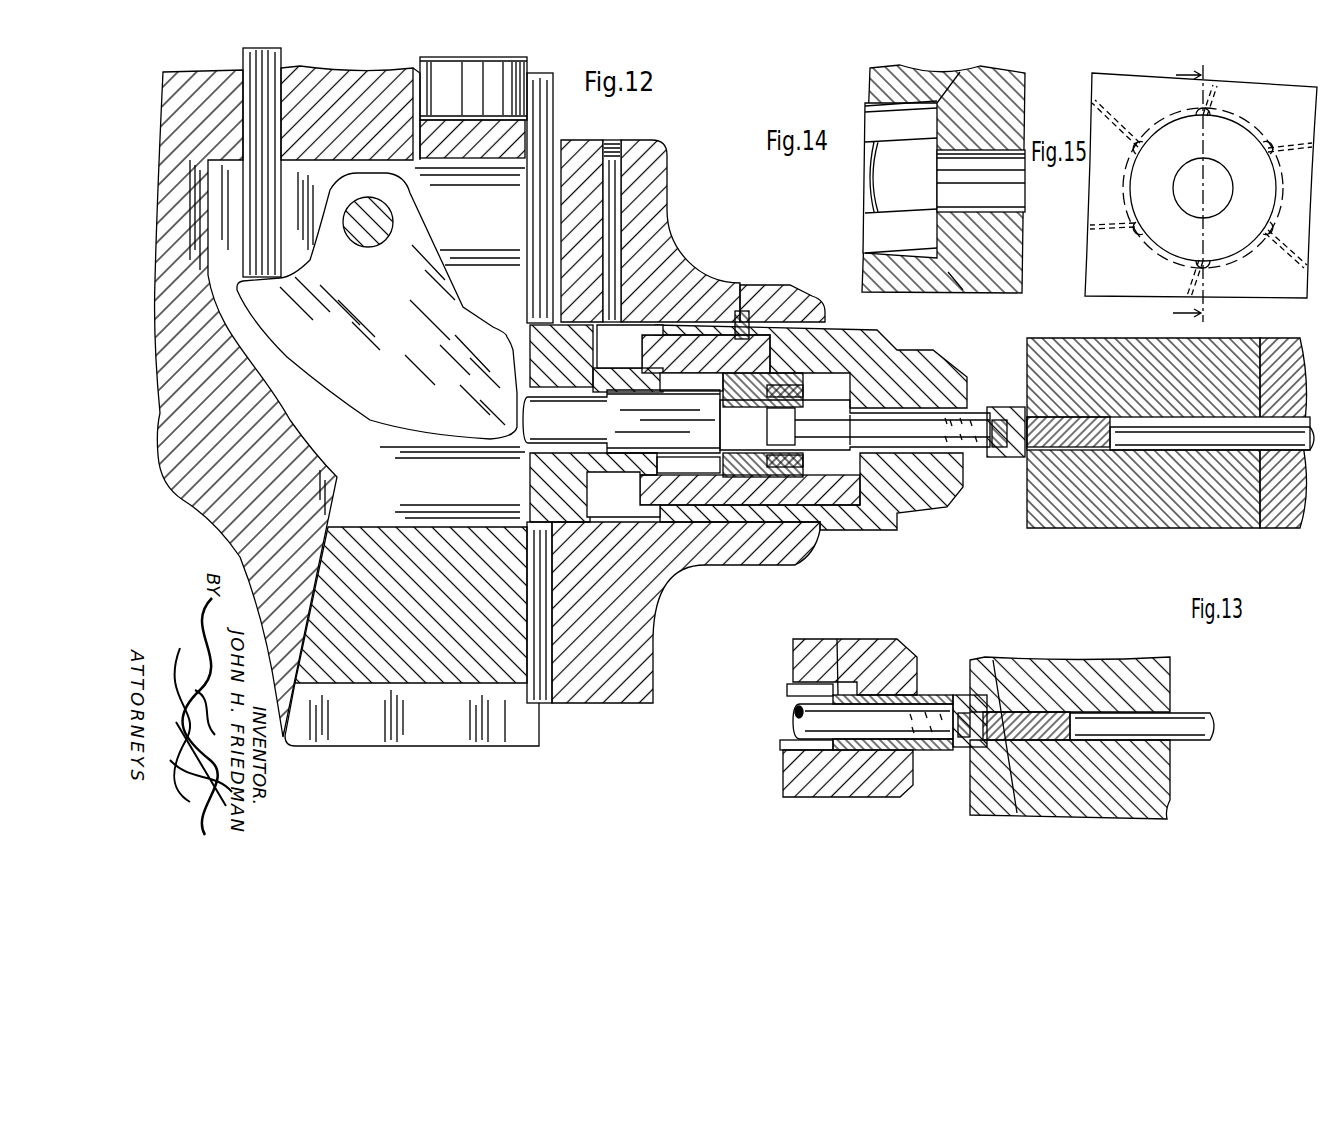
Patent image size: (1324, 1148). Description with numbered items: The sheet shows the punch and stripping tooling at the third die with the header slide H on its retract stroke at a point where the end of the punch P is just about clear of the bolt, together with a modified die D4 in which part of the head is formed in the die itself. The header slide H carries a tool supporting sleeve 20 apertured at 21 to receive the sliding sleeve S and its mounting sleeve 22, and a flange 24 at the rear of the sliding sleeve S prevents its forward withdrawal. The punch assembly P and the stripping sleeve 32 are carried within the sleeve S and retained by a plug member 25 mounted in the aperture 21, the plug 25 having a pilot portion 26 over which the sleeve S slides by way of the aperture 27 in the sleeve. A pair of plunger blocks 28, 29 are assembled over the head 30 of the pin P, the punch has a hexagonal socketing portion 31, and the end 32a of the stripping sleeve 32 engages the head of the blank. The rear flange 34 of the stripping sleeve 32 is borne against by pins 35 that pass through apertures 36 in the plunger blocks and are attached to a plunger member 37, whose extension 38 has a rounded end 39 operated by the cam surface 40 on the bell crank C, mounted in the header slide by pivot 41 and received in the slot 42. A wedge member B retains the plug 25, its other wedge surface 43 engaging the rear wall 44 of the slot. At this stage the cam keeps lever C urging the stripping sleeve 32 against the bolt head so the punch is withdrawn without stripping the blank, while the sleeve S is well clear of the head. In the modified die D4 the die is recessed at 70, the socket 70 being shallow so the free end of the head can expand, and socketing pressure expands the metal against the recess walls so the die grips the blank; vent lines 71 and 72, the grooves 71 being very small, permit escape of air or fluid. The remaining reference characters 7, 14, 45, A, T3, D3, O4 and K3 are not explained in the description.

In FIG. 12, the coupling sleeve 7 is at (1075, 450).
In FIG. 15, the section line 14 is at (1201, 195).
In FIG. 12, the tool supporting sleeve 20 is at (760, 285).
In FIG. 12, the aperture 21 is at (812, 530).
In FIG. 12, the mounting sleeve 22 is at (848, 532).
In FIG. 12, the flange 24 is at (655, 347).
In FIG. 12, the plug member 25 is at (538, 330).
In FIG. 12, the pilot portion 26 is at (632, 378).
In FIG. 12, the aperture 27 is at (718, 374).
In FIG. 12, the plunger block 28 is at (718, 383).
In FIG. 12, the plunger block 29 is at (822, 393).
In FIG. 12, the head 30 is at (790, 425).
In FIG. 12, the hexagonal socketing portion 31 is at (975, 452).
In FIG. 13, the hexagonal socketing portion 31 is at (930, 747).
In FIG. 12, the stripping sleeve 32 is at (913, 408).
In FIG. 13, the stripping sleeve 32 is at (925, 695).
In FIG. 12, the end of stripping sleeve 32a is at (990, 410).
In FIG. 13, the end of stripping sleeve 32a is at (960, 695).
In FIG. 12, the flange 34 is at (886, 402).
In FIG. 13, the flange 34 is at (837, 655).
In FIG. 12, the pins 35 is at (765, 393).
In FIG. 13, the pins 35 is at (787, 688).
In FIG. 12, the apertures 36 is at (752, 400).
In FIG. 12, the plunger member 37 is at (665, 430).
In FIG. 12, the extension 38 is at (525, 446).
In FIG. 12, the rounded end 39 is at (524, 392).
In FIG. 12, the cam surface 40 is at (507, 347).
In FIG. 12, the pivot 41 is at (390, 220).
In FIG. 12, the slot 42 is at (509, 520).
In FIG. 12, the wedge surface 43 is at (323, 513).
In FIG. 12, the rear wall 44 is at (318, 490).
In FIG. 12, the surface 45 is at (527, 479).
In FIG. 14, the socket 70 is at (880, 120).
In FIG. 15, the socket 70 is at (1245, 140).
In FIG. 14, the vent lines 71 is at (885, 98).
In FIG. 15, the vent lines 71 is at (1146, 148).
In FIG. 13, the vent lines 71 is at (985, 712).
In FIG. 14, the vent lines 72 is at (958, 92).
In FIG. 15, the vent lines 72 is at (1110, 112).
In FIG. 13, the vent lines 72 is at (1003, 670).
In FIG. 12, the bolt hole A is at (626, 142).
In FIG. 12, the wedge member B is at (416, 612).
In FIG. 12, the bell crank C is at (343, 368).
In FIG. 12, the header slide H is at (689, 251).
In FIG. 12, the punch assembly P is at (855, 425).
In FIG. 13, the punch assembly P is at (873, 721).
In FIG. 12, the sliding sleeve S is at (895, 513).
In FIG. 13, the sliding sleeve S is at (893, 648).
In FIG. 12, the tube T3 is at (943, 507).
In FIG. 12, the die D3 is at (1108, 338).
In FIG. 14, the die D3 is at (1028, 106).
In FIG. 15, the die D3 is at (1115, 332).
In FIG. 13, the die D4 is at (1068, 650).
In FIG. 12, the opening O4 is at (1083, 420).
In FIG. 12, the rod K3 is at (1173, 424).
In FIG. 13, the rod K3 is at (1195, 722).